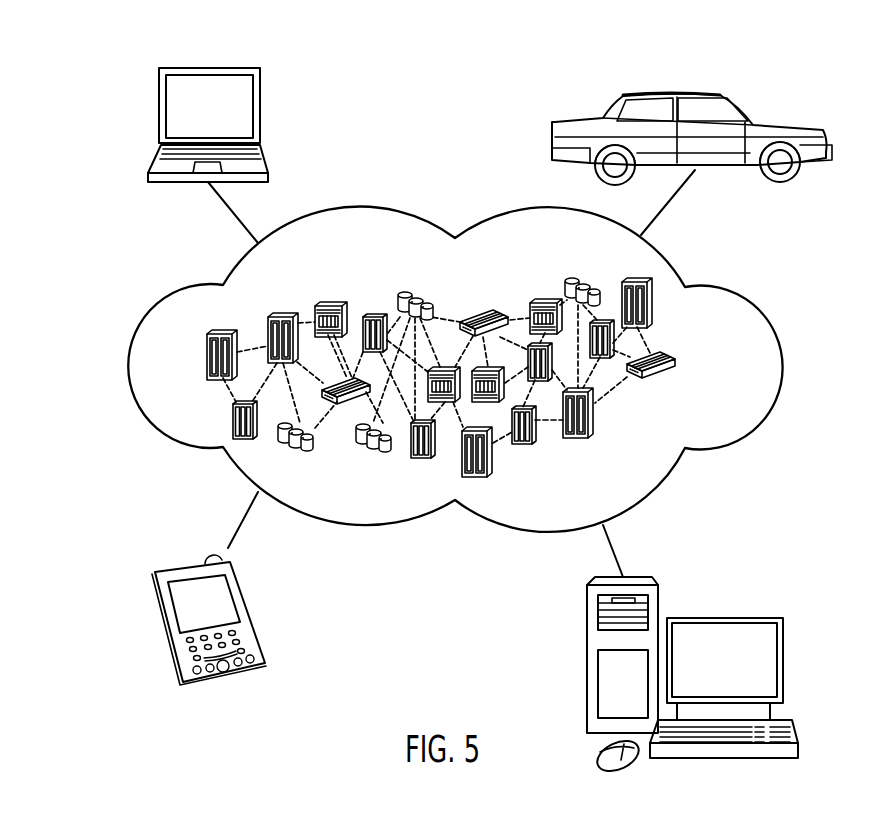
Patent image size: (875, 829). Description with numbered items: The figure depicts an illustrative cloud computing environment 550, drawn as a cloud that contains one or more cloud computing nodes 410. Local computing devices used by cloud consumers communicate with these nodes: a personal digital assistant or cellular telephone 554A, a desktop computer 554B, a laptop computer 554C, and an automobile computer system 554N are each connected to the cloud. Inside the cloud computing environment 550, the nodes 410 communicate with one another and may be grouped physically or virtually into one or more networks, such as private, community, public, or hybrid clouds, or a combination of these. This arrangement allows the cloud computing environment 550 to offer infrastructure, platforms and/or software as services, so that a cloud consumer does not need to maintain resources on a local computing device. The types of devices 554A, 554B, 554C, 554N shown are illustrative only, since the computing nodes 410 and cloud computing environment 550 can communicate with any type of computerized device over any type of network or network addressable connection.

The cloud computing environment 550 is at (735, 290).
The cloud computing nodes 410 is at (683, 367).
The personal digital assistant (PDA) or cellular telephone 554A is at (193, 563).
The desktop computer 554B is at (723, 617).
The laptop computer 554C is at (208, 68).
The automobile computer system 554N is at (673, 92).